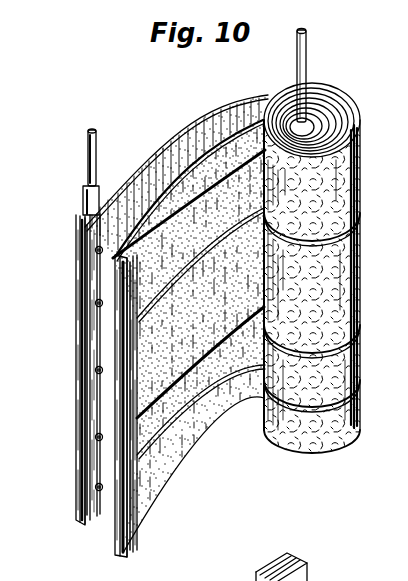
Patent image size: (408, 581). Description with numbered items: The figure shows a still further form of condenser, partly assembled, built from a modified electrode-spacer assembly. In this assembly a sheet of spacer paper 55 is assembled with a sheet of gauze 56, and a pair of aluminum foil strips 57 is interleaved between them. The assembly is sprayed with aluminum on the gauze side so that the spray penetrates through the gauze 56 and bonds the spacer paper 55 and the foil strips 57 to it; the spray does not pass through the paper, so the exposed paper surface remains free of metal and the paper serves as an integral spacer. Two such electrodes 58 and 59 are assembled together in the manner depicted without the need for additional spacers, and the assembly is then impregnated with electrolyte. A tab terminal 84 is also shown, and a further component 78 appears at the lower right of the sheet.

The spacer paper 55 is at (77, 492).
The gauze 56 is at (113, 516).
The aluminum foil strips 57 is at (80, 432).
The electrode 58 is at (180, 125).
The electrode 59 is at (203, 471).
The block 78 is at (300, 561).
The tab terminal 84 is at (308, 50).